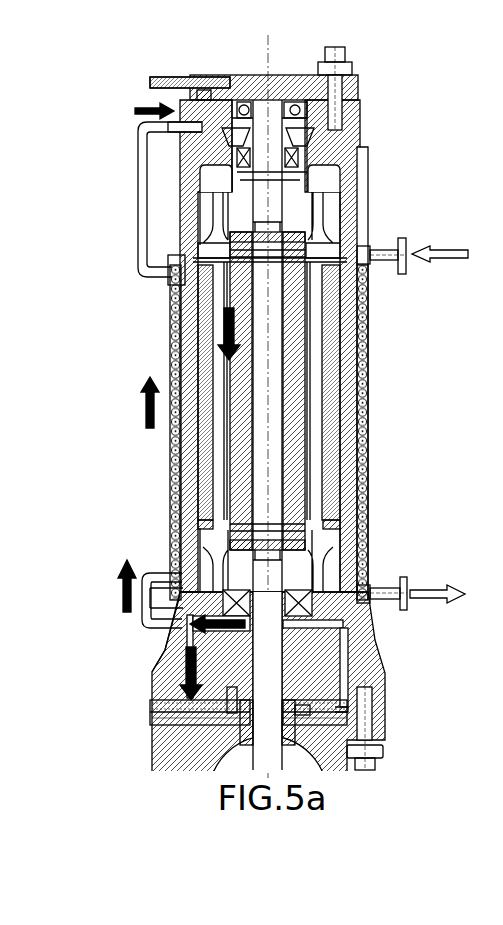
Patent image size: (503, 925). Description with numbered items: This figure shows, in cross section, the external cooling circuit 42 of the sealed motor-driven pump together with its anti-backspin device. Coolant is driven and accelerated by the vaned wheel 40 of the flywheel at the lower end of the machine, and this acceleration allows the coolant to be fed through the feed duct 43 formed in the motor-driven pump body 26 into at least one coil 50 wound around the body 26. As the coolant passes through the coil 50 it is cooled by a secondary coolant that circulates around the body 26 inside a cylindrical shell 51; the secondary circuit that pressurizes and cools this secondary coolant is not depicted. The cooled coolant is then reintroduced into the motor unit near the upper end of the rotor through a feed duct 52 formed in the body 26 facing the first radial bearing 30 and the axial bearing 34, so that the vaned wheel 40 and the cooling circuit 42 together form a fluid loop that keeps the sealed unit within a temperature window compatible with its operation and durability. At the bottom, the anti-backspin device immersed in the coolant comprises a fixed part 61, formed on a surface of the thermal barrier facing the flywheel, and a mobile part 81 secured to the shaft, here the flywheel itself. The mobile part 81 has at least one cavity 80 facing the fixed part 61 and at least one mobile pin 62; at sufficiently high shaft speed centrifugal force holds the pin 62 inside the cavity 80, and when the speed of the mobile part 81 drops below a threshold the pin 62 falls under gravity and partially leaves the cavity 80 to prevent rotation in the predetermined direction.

The motor-driven pump body 26 is at (345, 352).
The first radial bearing 30 is at (300, 138).
The axial bearing 34 is at (302, 112).
The vaned wheel 40 is at (323, 630).
The external cooling circuit 42 is at (140, 330).
The feed duct 43 is at (178, 640).
The coil 50 is at (172, 484).
The cylindrical shell 51 is at (170, 455).
The feed duct 52 is at (200, 120).
The fixed part 61 is at (222, 705).
The mobile pin 62 is at (232, 703).
The cavity 80 is at (217, 717).
The mobile part 81 is at (205, 697).